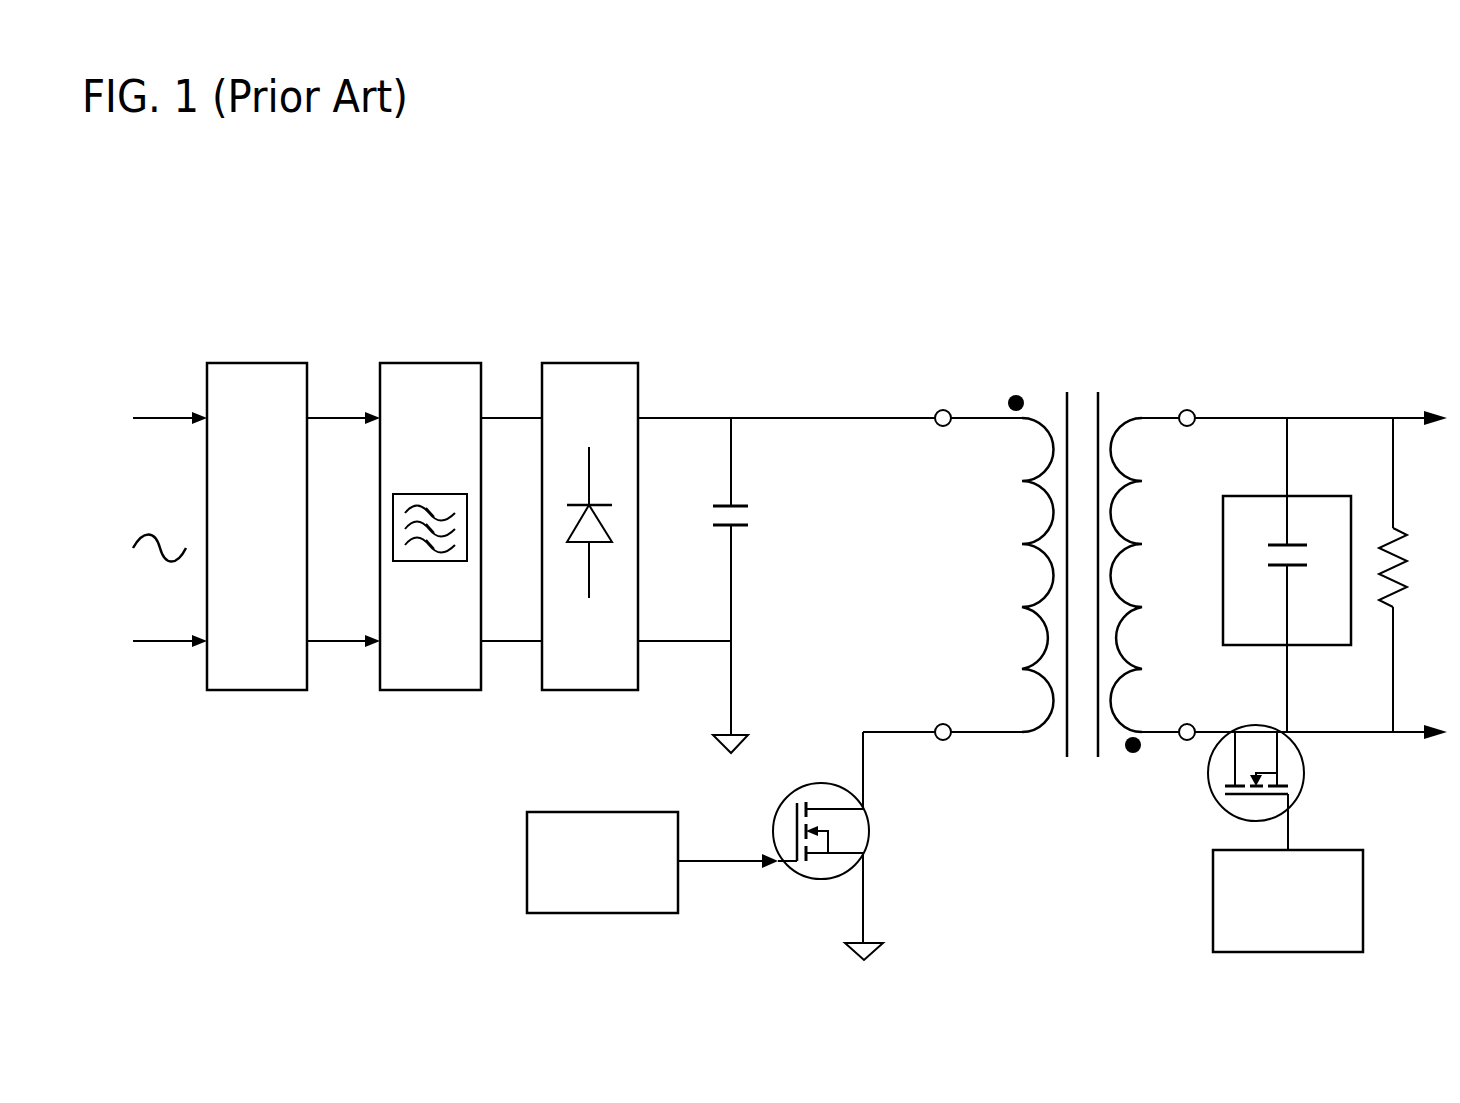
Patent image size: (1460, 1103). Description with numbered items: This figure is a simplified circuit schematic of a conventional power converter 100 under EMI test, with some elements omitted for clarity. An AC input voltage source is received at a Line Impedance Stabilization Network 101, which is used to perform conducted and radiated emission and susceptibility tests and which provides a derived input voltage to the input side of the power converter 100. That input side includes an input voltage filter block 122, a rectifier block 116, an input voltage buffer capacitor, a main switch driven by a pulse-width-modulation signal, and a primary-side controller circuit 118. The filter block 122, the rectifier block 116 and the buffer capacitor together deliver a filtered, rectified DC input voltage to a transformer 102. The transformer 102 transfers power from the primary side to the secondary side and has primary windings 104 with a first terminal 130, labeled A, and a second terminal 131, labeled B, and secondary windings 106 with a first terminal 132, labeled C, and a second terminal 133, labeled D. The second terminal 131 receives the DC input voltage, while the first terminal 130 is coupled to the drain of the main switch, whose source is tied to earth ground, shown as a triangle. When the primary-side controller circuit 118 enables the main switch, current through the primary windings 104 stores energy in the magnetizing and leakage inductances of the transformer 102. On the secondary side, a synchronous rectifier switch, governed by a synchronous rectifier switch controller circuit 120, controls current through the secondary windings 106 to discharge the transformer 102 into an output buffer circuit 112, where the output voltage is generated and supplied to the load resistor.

The power converter 100 is at (173, 178).
The Line Impedance Stabilization Network (LISN) 101 is at (257, 526).
The transformer 102 is at (1070, 606).
The primary windings 104 is at (995, 367).
The secondary windings 106 is at (1108, 367).
The output buffer circuit 112 is at (1287, 575).
The rectifier block 116 is at (590, 526).
The primary-side controller circuit 118 is at (602, 862).
The synchronous rectifier switch controller circuit 120 is at (1288, 901).
The input voltage filter block 122 is at (430, 526).
The first terminal 130 is at (945, 740).
The second terminal 131 is at (940, 410).
The first terminal 132 is at (1186, 724).
The second terminal 133 is at (1192, 410).